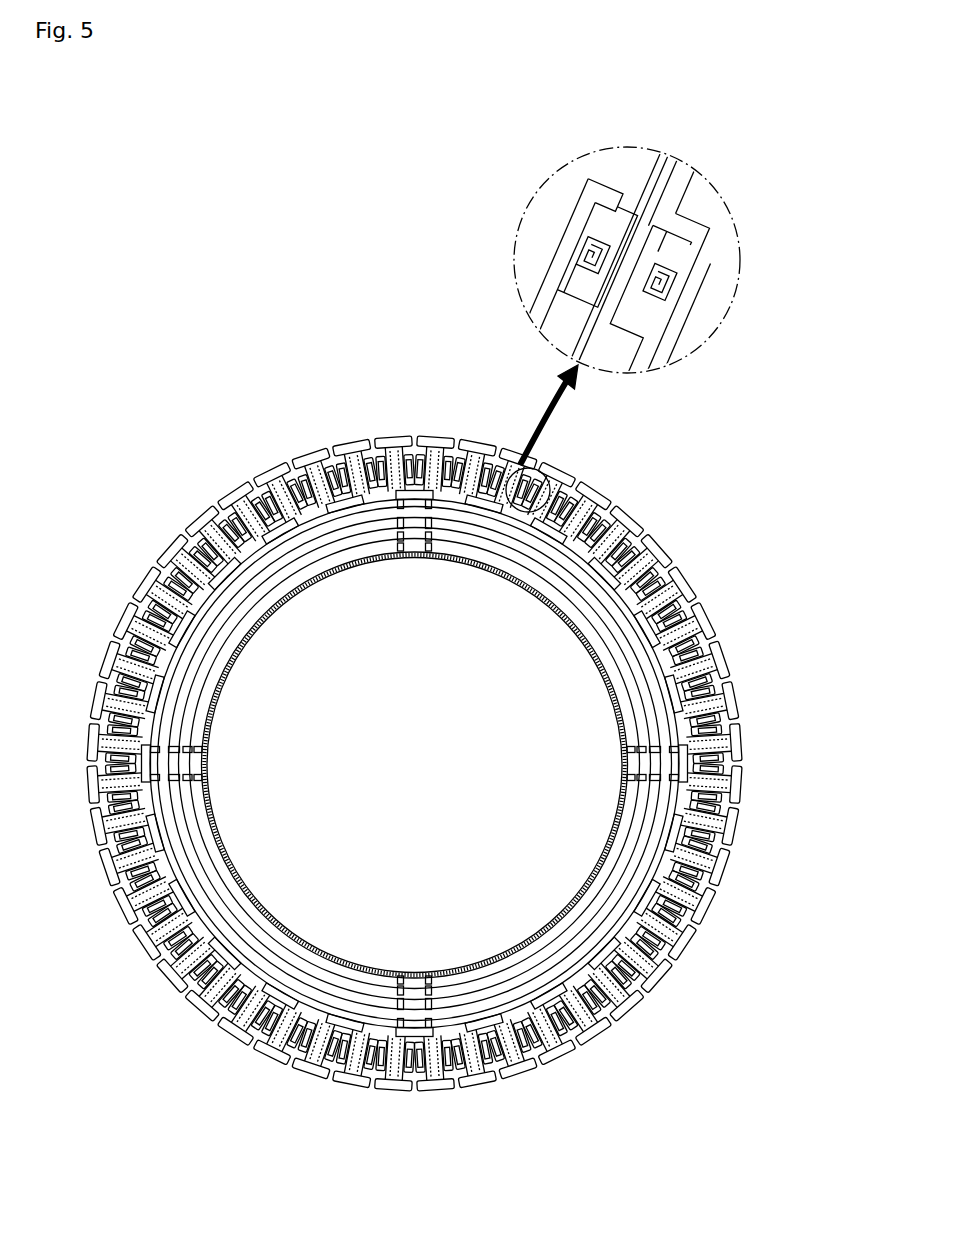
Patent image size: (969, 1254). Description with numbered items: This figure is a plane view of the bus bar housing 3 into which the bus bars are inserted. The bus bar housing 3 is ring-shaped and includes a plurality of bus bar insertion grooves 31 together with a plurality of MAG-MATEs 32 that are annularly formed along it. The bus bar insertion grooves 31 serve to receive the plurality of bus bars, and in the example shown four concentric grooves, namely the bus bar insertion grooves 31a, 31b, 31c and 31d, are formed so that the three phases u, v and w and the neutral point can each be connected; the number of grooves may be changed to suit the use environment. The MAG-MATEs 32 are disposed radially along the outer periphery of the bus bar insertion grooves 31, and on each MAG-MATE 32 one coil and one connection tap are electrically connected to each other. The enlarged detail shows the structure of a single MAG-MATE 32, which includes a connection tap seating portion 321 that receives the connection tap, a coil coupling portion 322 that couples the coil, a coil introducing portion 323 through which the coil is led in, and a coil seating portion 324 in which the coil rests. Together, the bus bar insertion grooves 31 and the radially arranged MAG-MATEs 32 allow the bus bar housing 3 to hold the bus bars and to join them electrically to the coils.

The bus bar housing 3 is at (326, 406).
The bus bar insertion grooves 31 is at (527, 662).
The bus bar insertion groove 31a is at (465, 556).
The bus bar insertion groove 31b is at (502, 551).
The bus bar insertion groove 31c is at (538, 546).
The bus bar insertion groove 31d is at (551, 538).
The MAG-MATE 32 is at (588, 147).
The connection tap seating portion 321 is at (563, 335).
The coil coupling portion 322 is at (580, 288).
The coil introducing portion 323 is at (672, 160).
The coil seating portion 324 is at (637, 244).